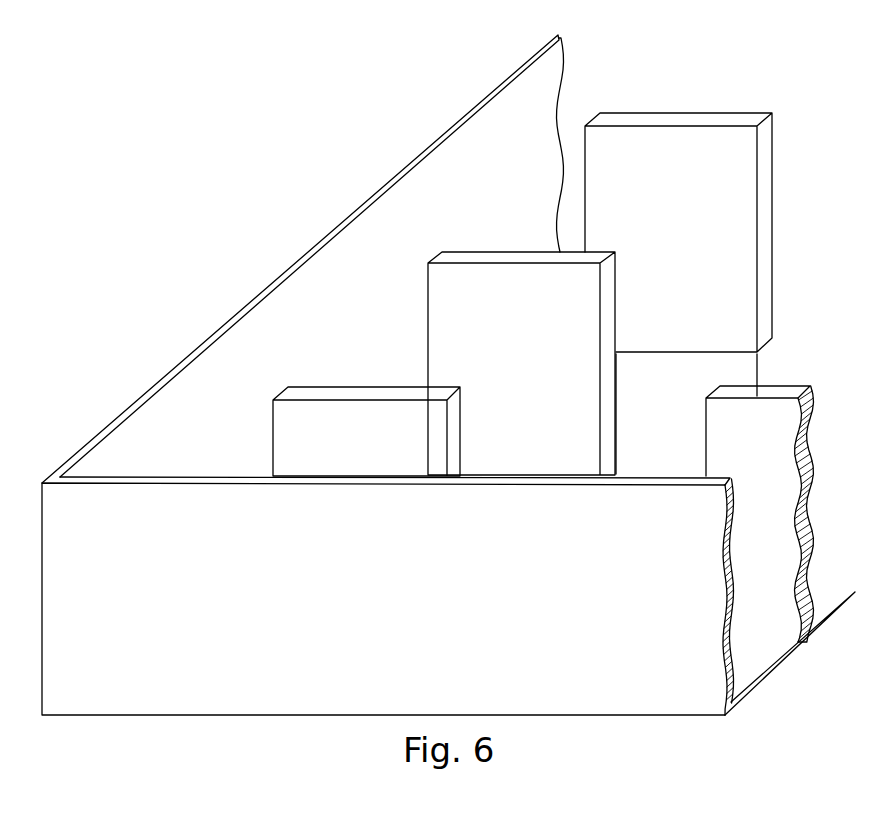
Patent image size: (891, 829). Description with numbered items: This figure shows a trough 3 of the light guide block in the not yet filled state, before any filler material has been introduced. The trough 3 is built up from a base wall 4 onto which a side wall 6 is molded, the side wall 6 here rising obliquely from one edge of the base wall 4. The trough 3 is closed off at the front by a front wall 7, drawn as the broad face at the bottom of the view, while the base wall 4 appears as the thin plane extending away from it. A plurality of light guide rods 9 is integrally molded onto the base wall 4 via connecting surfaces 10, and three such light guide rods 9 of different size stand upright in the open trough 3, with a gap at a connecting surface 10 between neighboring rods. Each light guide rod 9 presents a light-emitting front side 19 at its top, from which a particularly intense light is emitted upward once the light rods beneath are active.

The trough 3 is at (289, 212).
The base wall 4 is at (800, 645).
The side wall 6 is at (185, 353).
The front wall 7 is at (543, 697).
The light guide rod 9 is at (360, 422).
The connecting surface 10 is at (688, 368).
The light-emitting front side 19 is at (308, 393).